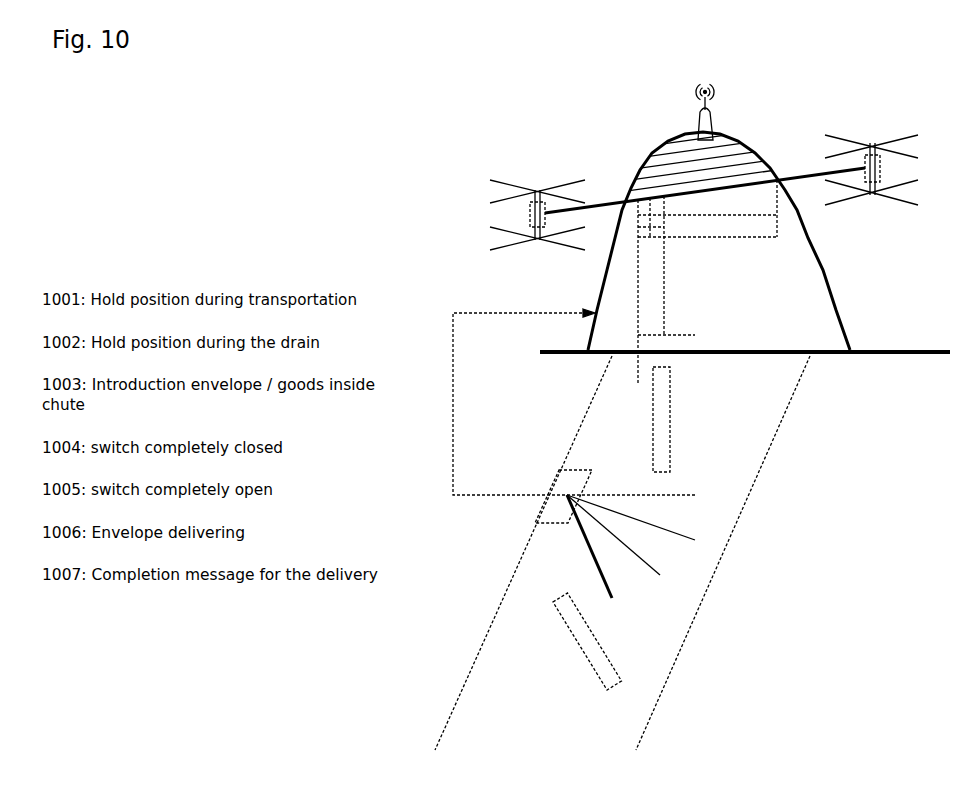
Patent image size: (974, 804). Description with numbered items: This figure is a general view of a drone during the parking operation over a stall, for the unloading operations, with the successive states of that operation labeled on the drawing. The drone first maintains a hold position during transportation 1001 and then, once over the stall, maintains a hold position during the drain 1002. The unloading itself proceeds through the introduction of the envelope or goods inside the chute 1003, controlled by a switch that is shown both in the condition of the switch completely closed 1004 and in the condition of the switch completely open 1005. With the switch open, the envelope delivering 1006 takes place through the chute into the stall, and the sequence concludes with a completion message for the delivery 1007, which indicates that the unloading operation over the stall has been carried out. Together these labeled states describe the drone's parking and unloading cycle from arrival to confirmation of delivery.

The Hold position during transportation 1001 is at (704, 192).
The Hold position during the drain 1002 is at (707, 282).
The Introduction envelope / goods inside chute 1003 is at (687, 419).
The switch completely closed 1004 is at (629, 496).
The switch completely open 1005 is at (631, 551).
The Envelope delivering 1006 is at (568, 641).
The Completion message for the delivery 1007 is at (543, 402).